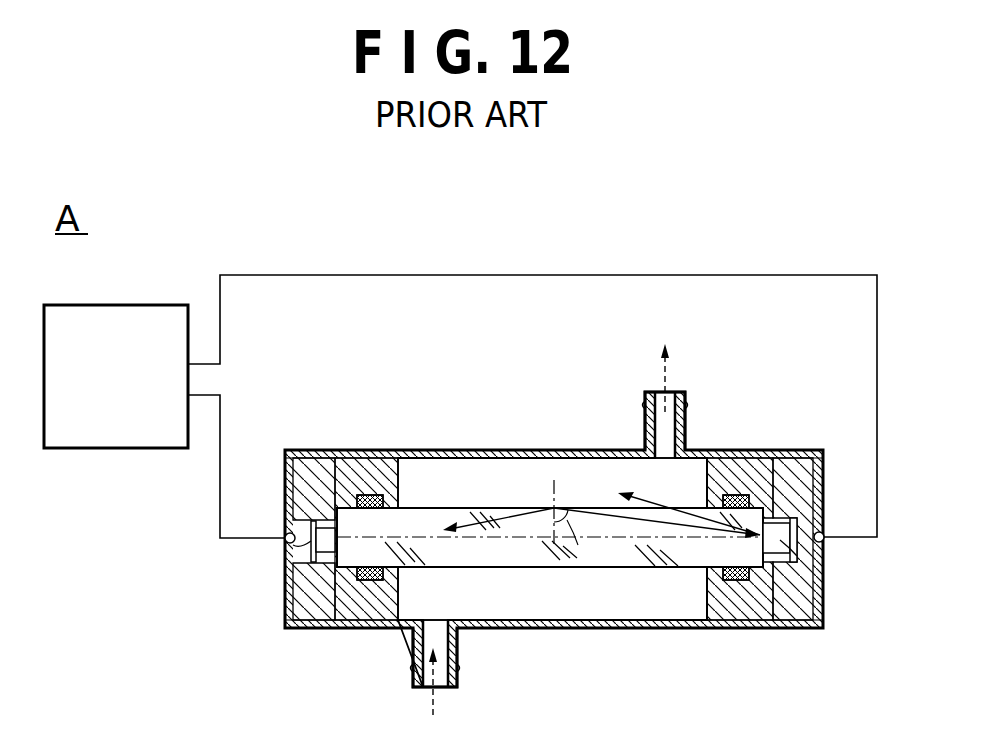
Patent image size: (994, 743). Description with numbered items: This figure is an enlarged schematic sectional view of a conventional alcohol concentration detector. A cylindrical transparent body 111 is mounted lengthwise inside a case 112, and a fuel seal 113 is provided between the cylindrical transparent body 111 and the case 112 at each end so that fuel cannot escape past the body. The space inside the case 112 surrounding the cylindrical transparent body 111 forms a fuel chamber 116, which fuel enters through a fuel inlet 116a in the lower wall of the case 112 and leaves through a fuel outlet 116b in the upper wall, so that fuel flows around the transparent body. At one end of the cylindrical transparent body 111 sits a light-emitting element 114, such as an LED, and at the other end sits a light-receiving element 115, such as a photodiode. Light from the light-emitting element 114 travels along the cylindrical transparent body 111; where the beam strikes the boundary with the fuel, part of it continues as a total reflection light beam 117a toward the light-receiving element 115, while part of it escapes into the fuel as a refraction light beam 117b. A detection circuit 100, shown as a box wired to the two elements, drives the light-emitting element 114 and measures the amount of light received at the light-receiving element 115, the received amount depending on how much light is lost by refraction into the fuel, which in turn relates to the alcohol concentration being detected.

The detection circuit 100 is at (117, 448).
The cylindrical transparent body 111 is at (648, 568).
The case 112 is at (593, 626).
The fuel seal 113 is at (745, 583).
The light-emitting element 114 is at (798, 556).
The light-receiving element 115 is at (287, 546).
The fuel chamber 116 is at (520, 596).
The fuel inlet 116a is at (412, 665).
The fuel outlet 116b is at (645, 402).
The total reflection light beam 117a is at (580, 507).
The refraction light beam 117b is at (658, 497).